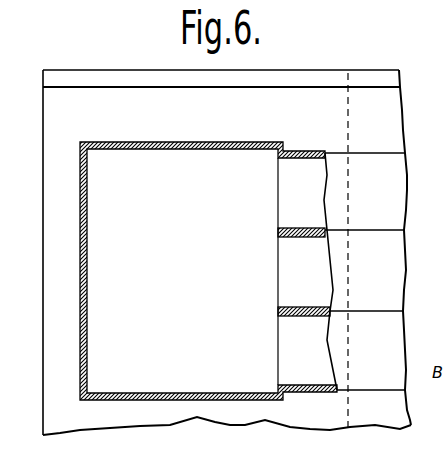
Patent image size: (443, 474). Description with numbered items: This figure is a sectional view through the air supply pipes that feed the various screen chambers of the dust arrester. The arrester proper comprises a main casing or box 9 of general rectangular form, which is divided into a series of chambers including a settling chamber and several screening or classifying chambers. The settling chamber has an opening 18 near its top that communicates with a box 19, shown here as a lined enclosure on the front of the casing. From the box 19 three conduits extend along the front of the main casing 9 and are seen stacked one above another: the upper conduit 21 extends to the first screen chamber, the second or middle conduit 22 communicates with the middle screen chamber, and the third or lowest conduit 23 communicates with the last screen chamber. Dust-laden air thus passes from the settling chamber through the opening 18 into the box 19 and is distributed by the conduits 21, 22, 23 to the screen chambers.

The main casing 9 is at (331, 79).
The opening 18 is at (110, 250).
The box 19 is at (83, 183).
The upper conduit 21 is at (393, 195).
The middle conduit 22 is at (393, 277).
The lowest conduit 23 is at (382, 349).